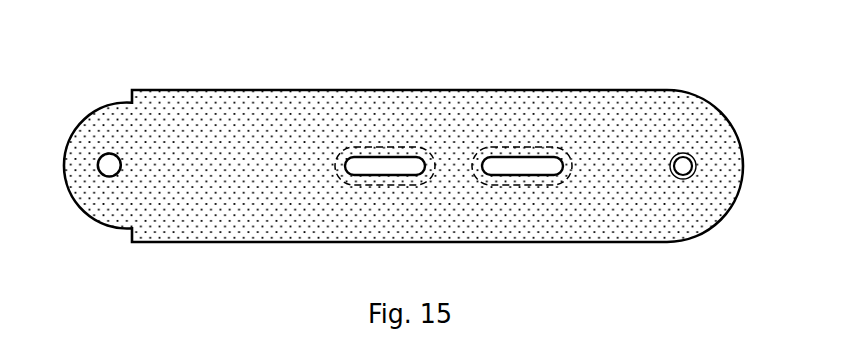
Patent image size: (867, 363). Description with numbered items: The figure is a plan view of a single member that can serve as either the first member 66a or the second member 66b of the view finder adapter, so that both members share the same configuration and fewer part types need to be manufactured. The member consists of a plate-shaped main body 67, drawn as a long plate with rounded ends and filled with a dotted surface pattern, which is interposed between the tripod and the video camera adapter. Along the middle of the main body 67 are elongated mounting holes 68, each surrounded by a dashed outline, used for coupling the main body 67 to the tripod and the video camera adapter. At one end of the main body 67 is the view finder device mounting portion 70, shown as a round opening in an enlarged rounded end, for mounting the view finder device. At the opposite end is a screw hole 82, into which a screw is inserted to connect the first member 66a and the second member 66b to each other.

The first member 66a is at (418, 148).
The second member 66b is at (418, 148).
The main body 67 is at (262, 90).
The mounting hole 68 is at (329, 185).
The view finder device mounting portion 70 is at (104, 143).
The screw hole 82 is at (691, 145).